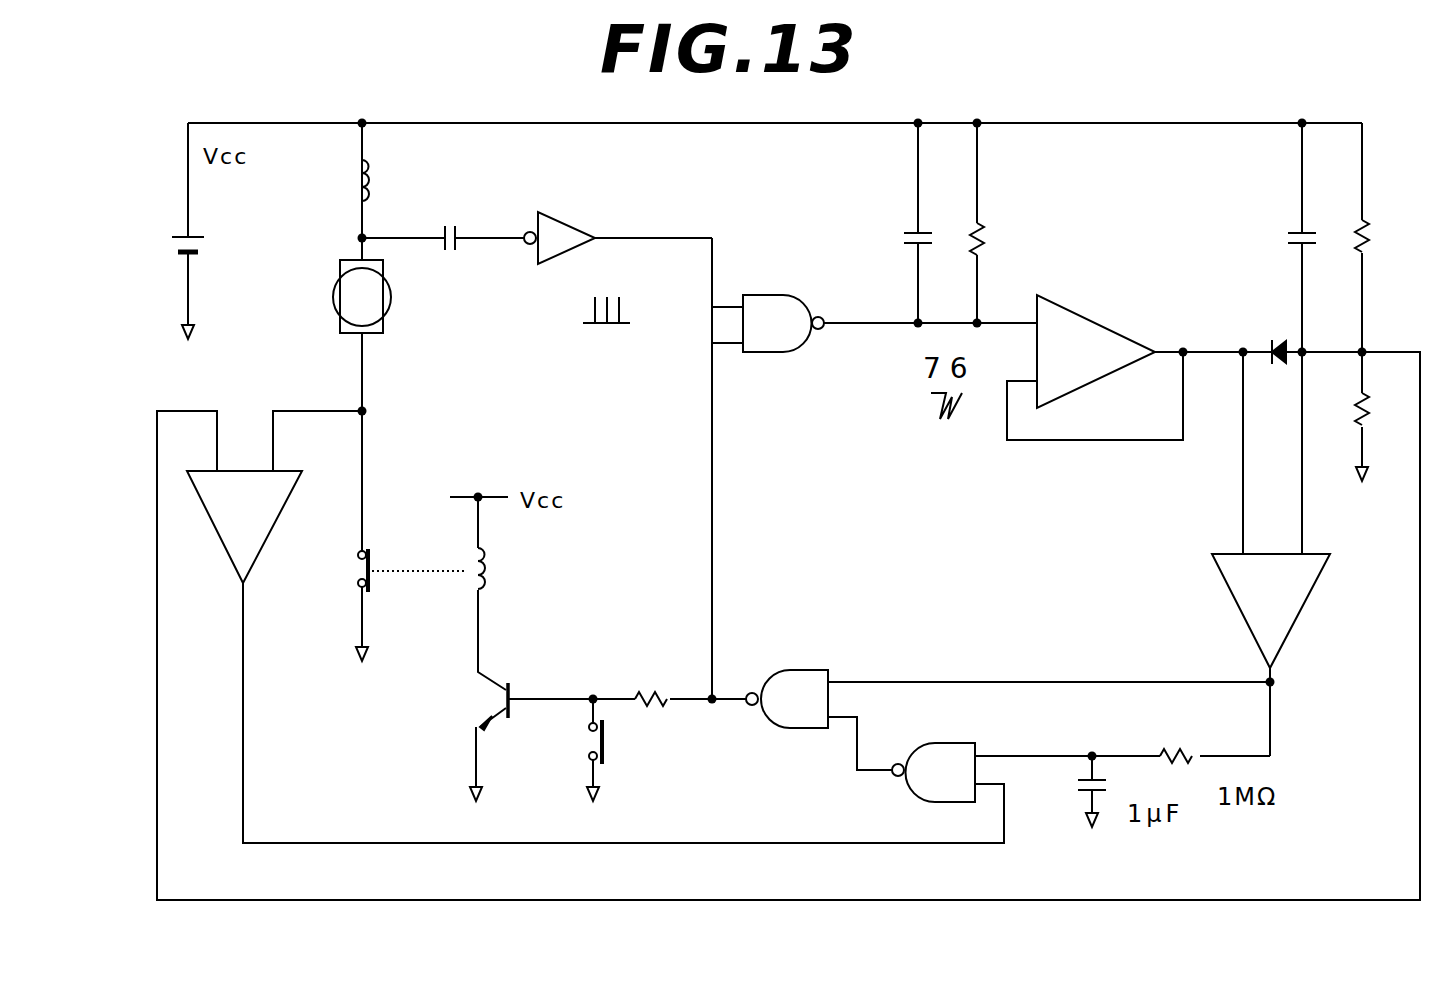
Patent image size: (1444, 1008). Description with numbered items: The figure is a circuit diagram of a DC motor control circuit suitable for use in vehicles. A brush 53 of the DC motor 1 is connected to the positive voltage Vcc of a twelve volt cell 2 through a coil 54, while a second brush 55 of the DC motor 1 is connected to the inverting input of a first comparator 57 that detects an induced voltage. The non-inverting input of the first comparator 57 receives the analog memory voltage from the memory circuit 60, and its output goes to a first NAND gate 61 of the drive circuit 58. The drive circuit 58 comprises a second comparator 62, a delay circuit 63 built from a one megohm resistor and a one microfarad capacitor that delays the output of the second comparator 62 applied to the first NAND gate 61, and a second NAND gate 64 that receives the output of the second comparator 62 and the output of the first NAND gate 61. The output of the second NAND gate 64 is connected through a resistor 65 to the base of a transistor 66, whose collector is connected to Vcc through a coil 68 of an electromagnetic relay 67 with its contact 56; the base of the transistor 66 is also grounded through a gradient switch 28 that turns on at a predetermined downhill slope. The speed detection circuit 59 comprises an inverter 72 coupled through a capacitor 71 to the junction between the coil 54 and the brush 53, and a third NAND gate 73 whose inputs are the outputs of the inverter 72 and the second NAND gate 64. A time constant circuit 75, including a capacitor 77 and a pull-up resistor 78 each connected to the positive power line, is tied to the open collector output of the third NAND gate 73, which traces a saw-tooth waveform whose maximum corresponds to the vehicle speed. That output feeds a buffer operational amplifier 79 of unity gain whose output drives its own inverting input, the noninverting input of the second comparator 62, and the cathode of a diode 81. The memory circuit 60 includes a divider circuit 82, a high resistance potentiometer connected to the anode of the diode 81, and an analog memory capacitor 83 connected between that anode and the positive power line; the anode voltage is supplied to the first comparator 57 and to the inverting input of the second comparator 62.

The DC motor 1 is at (334, 298).
The cell 2 is at (192, 240).
The gradient switch 28 is at (605, 752).
The brush 53 is at (352, 262).
The coil 54 is at (356, 185).
The second brush 55 is at (384, 326).
The relay switch 56 is at (356, 580).
The first comparator 57 is at (228, 558).
The drive circuit 58 is at (860, 679).
The speed detection circuit 59 is at (675, 249).
The memory circuit 60 is at (1265, 255).
The first NAND gate 61 is at (942, 744).
The second comparator 62 is at (1238, 605).
The delay circuit 63 is at (1202, 729).
The second NAND gate 64 is at (796, 668).
The resistor 65 is at (658, 690).
The transistor 66 is at (512, 706).
The electromagnetic relay 67 is at (425, 573).
The coil 68 is at (486, 568).
The capacitor 71 is at (458, 250).
The inverter 72 is at (560, 212).
The third NAND gate 73 is at (768, 295).
The time constant circuit 75 is at (996, 277).
The capacitor 77 is at (906, 237).
The pull-up resistor 78 is at (984, 240).
The operational amplifier 79 is at (1103, 322).
The diode 81 is at (1280, 340).
The divider circuit 82 is at (1442, 328).
The capacitor 83 is at (1297, 236).